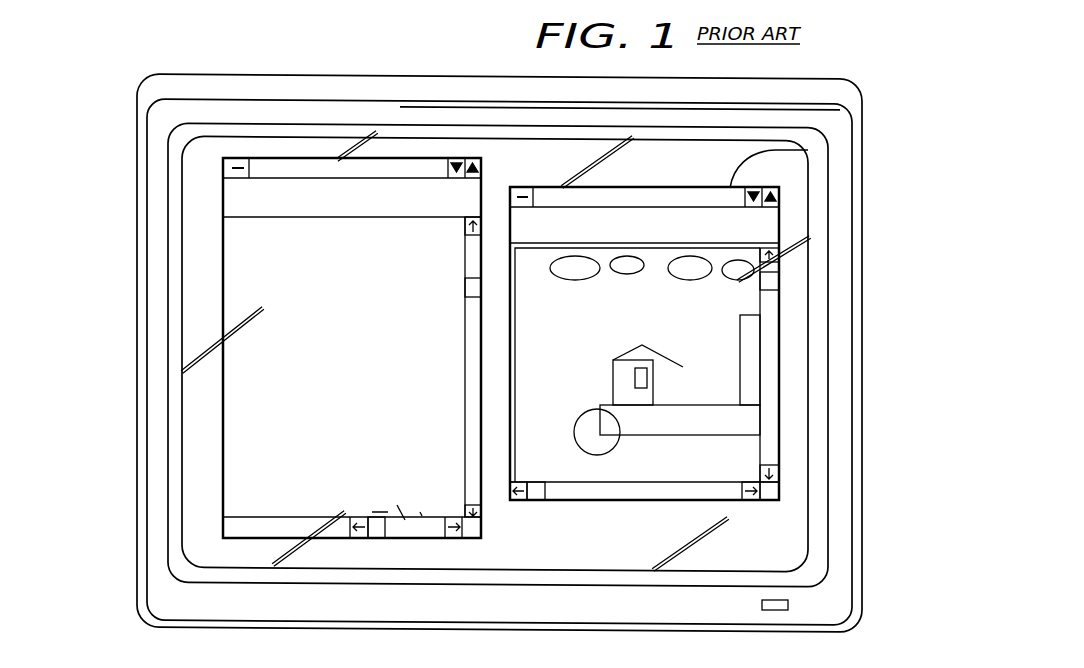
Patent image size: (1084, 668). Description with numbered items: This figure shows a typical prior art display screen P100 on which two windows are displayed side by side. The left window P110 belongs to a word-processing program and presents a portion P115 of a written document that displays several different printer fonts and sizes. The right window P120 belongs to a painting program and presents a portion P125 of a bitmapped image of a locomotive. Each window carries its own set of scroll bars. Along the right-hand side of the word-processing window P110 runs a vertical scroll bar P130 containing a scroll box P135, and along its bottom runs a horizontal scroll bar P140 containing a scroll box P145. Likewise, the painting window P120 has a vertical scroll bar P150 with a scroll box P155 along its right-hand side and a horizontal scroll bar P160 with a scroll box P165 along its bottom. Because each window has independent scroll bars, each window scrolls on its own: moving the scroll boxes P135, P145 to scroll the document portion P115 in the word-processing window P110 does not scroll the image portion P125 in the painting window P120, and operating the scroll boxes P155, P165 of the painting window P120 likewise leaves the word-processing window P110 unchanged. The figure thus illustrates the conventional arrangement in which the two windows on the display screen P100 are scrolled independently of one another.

The display screen P100 is at (853, 137).
The window P110 is at (331, 342).
The portion of a written document P115 is at (255, 493).
The window P120 is at (808, 150).
The portion of a bitmapped image P125 is at (723, 425).
The vertical scroll bar P130 is at (530, 327).
The scroll box P135 is at (473, 288).
The horizontal scroll bar P140 is at (359, 588).
The scroll box P145 is at (377, 527).
The vertical scroll bar P150 is at (848, 360).
The scroll box P155 is at (773, 277).
The horizontal scroll bar P160 is at (644, 572).
The scroll box P165 is at (537, 490).